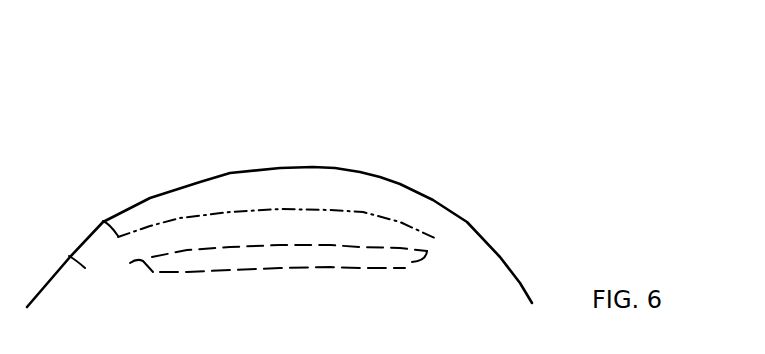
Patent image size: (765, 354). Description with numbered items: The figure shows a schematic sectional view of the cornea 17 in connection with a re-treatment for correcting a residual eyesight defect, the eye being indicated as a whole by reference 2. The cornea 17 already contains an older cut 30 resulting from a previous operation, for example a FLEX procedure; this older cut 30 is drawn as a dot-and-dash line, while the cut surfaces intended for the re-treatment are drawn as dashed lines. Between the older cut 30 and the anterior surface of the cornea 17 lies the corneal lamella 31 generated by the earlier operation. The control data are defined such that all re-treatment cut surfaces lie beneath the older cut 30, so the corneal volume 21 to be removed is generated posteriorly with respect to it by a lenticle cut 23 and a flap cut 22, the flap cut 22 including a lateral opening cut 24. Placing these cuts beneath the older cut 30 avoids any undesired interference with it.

The pane 2 is at (484, 180).
The cornea 17 is at (467, 220).
The corneal volume 21 is at (412, 262).
The flap cut 22 is at (372, 247).
The lenticle cut 23 is at (297, 268).
The lateral opening cut 24 is at (93, 267).
The older cut 30 is at (246, 209).
The corneal lamella 31 is at (315, 188).